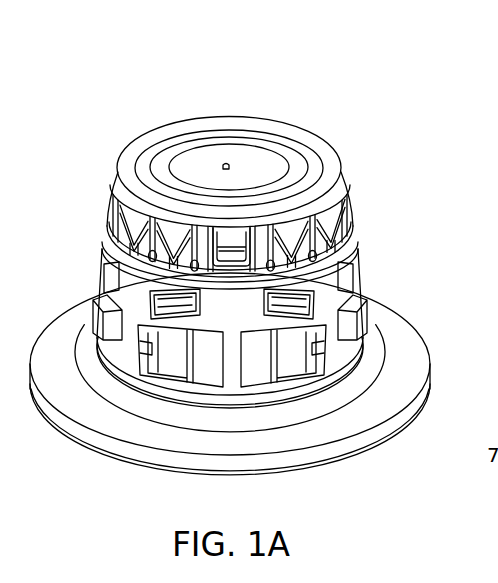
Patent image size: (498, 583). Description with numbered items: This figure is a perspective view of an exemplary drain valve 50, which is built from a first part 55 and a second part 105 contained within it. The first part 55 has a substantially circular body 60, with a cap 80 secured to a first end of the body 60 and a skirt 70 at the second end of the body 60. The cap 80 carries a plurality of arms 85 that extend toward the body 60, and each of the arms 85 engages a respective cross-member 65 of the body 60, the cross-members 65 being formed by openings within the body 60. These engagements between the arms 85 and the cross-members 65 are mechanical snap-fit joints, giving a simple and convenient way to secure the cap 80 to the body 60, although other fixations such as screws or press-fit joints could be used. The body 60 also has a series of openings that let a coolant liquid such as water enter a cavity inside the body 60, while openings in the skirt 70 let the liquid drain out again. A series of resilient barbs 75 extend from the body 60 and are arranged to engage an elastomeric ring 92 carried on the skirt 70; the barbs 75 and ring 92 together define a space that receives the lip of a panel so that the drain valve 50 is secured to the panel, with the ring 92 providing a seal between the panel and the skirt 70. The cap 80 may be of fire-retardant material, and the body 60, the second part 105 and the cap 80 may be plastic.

The drain valve 50 is at (117, 81).
The first part 55 is at (78, 229).
The body 60 is at (353, 237).
The cross-member 65 is at (292, 284).
The skirt 70 is at (332, 452).
The resilient barbs 75 is at (97, 300).
The cap 80 is at (268, 131).
The arms 85 is at (298, 295).
The elastomeric ring 92 is at (97, 380).
The second part 105 is at (205, 365).